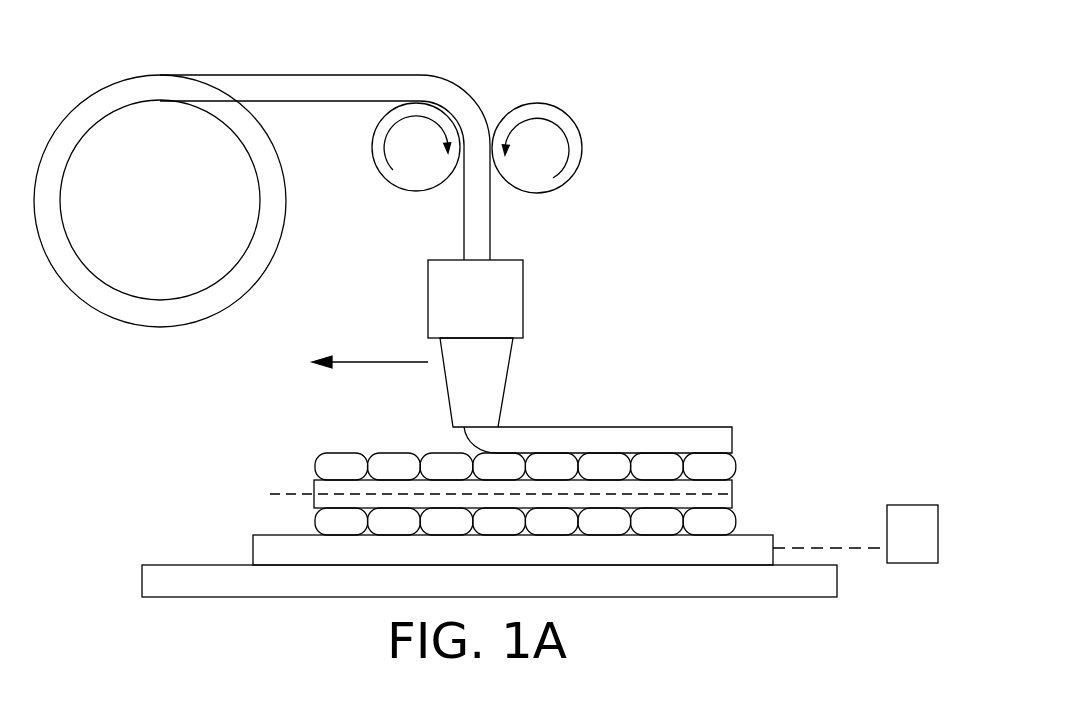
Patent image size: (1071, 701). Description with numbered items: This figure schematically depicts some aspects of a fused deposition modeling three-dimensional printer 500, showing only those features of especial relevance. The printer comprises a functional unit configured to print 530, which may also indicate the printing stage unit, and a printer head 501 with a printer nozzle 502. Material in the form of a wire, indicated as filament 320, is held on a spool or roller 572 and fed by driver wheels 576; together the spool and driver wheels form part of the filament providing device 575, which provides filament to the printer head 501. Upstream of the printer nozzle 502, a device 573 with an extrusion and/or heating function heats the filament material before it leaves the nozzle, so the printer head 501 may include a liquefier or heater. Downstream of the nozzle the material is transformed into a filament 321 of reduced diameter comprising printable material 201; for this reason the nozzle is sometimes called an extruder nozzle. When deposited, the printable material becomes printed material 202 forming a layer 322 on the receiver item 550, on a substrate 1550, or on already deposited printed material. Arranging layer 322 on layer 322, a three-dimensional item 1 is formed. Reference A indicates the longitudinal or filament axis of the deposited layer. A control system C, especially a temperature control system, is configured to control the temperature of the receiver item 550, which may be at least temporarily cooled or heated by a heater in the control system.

The spool or roller 572 is at (93, 66).
The driver wheels 576 is at (481, 68).
The filament providing device 575 is at (602, 106).
The extrusion and/or heating device 573 is at (560, 228).
The filament 320 is at (434, 224).
The 3D printer 500 is at (769, 243).
The printer head 501 is at (510, 305).
The printer nozzle 502 is at (438, 410).
The filament 321 is at (546, 419).
The 3D printable material 201 is at (483, 407).
The 3D printed material 202 is at (703, 433).
The layer 322 is at (728, 440).
The 3D item 1 is at (804, 450).
The substrate 1550 is at (233, 484).
The receiver item 550 is at (224, 551).
The functional unit configured to 3D print 530 is at (134, 373).
The longitudinal axis A is at (292, 492).
The control system C is at (903, 551).